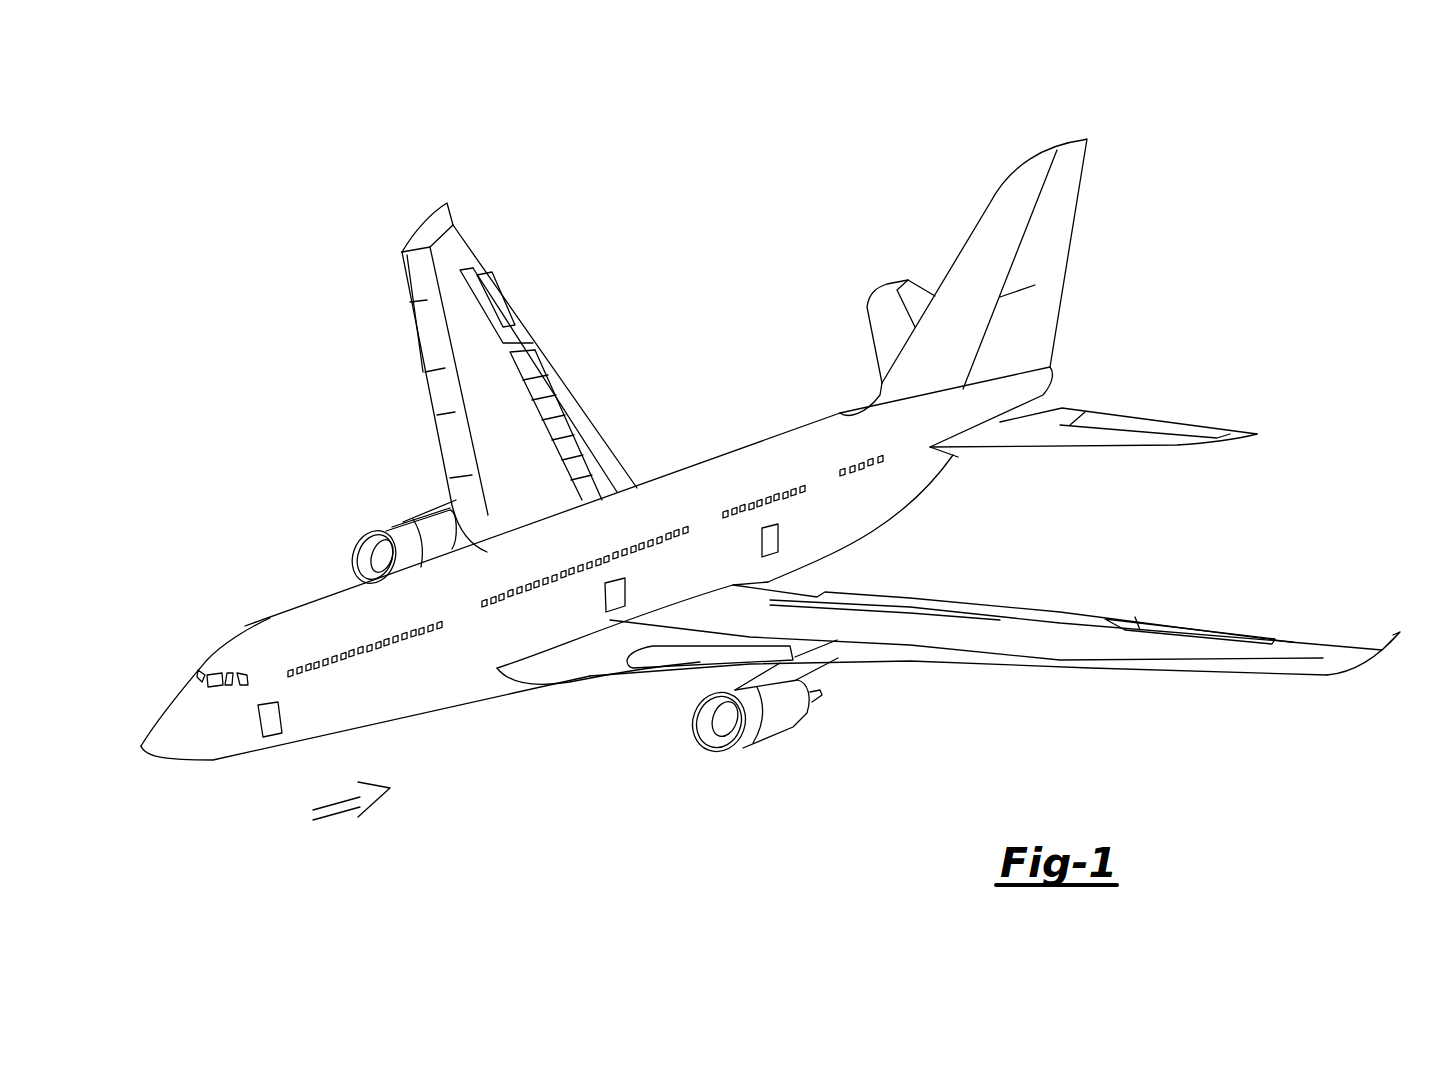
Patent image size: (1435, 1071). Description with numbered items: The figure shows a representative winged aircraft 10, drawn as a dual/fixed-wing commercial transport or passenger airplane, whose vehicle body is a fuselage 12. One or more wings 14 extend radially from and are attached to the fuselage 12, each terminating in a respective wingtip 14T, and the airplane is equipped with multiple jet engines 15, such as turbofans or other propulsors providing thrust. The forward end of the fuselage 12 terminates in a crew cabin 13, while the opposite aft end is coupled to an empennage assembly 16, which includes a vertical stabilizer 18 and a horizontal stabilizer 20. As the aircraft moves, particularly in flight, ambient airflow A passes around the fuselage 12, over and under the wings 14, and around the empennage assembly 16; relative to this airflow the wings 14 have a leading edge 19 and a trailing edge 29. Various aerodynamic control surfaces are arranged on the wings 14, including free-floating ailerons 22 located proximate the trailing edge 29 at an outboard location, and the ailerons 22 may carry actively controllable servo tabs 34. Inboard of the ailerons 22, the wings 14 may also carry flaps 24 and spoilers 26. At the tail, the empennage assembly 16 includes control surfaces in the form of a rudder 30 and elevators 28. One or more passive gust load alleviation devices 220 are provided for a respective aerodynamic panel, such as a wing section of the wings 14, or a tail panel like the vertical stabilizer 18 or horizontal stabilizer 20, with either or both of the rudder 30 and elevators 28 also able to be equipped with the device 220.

The winged aircraft 10 is at (1185, 78).
The fuselage 12 is at (770, 434).
The crew cabin 13 is at (141, 746).
The wings 14 is at (375, 228).
The wingtip 14T is at (413, 237).
The jet engines 15 is at (345, 540).
The empennage assembly 16 is at (1102, 265).
The vertical stabilizer 18 is at (1000, 205).
The leading edge 19 is at (410, 338).
The horizontal stabilizer 20 is at (867, 340).
The ailerons 22 is at (497, 322).
The flaps 24 is at (604, 438).
The spoilers 26 is at (540, 386).
The elevators 28 is at (912, 300).
The trailing edge 29 is at (467, 237).
The rudder 30 is at (1055, 205).
The servo tabs 34 is at (497, 290).
The passive gust load alleviation (PGLA) device 220 is at (548, 326).
The ambient airflow A is at (340, 795).